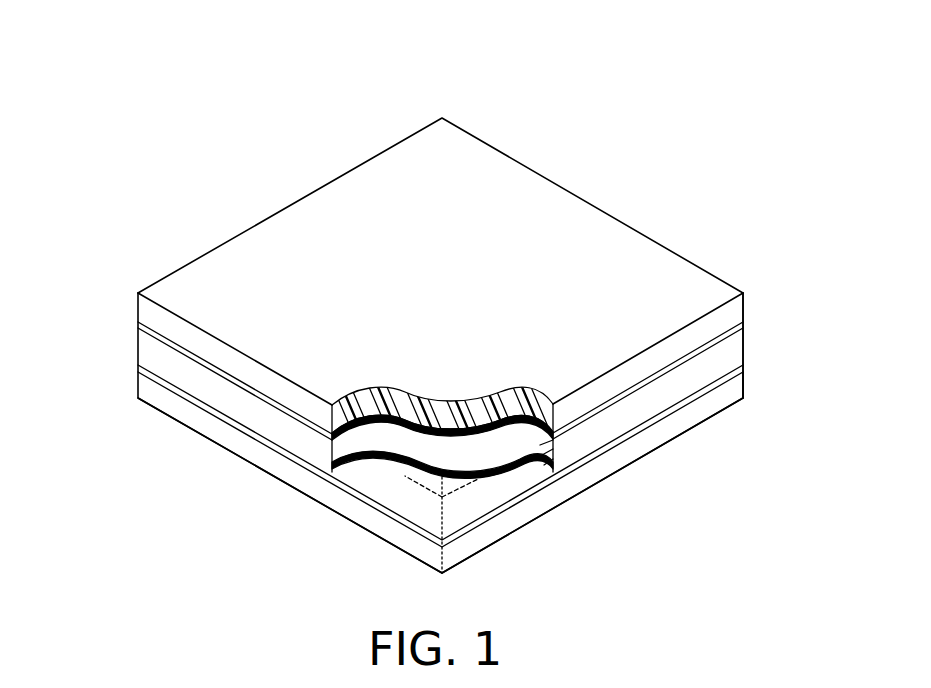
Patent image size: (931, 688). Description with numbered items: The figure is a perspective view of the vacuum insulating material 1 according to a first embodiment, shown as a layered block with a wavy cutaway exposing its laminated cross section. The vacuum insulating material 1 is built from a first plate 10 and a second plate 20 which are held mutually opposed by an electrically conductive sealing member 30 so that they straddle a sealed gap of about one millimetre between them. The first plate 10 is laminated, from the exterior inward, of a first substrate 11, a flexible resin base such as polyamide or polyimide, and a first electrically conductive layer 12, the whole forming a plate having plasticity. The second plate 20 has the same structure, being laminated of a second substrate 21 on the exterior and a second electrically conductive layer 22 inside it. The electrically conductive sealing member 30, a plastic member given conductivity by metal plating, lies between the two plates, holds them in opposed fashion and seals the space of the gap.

The vacuum insulating material 1 is at (489, 111).
The first plate 10 is at (605, 212).
The first substrate 11 is at (747, 308).
The first electrically conductive layer 12 is at (138, 324).
The electrically conductive sealing member 30 is at (730, 355).
The second electrically conductive layer 22 is at (138, 367).
The second substrate 21 is at (746, 389).
The second plate 20 is at (625, 470).